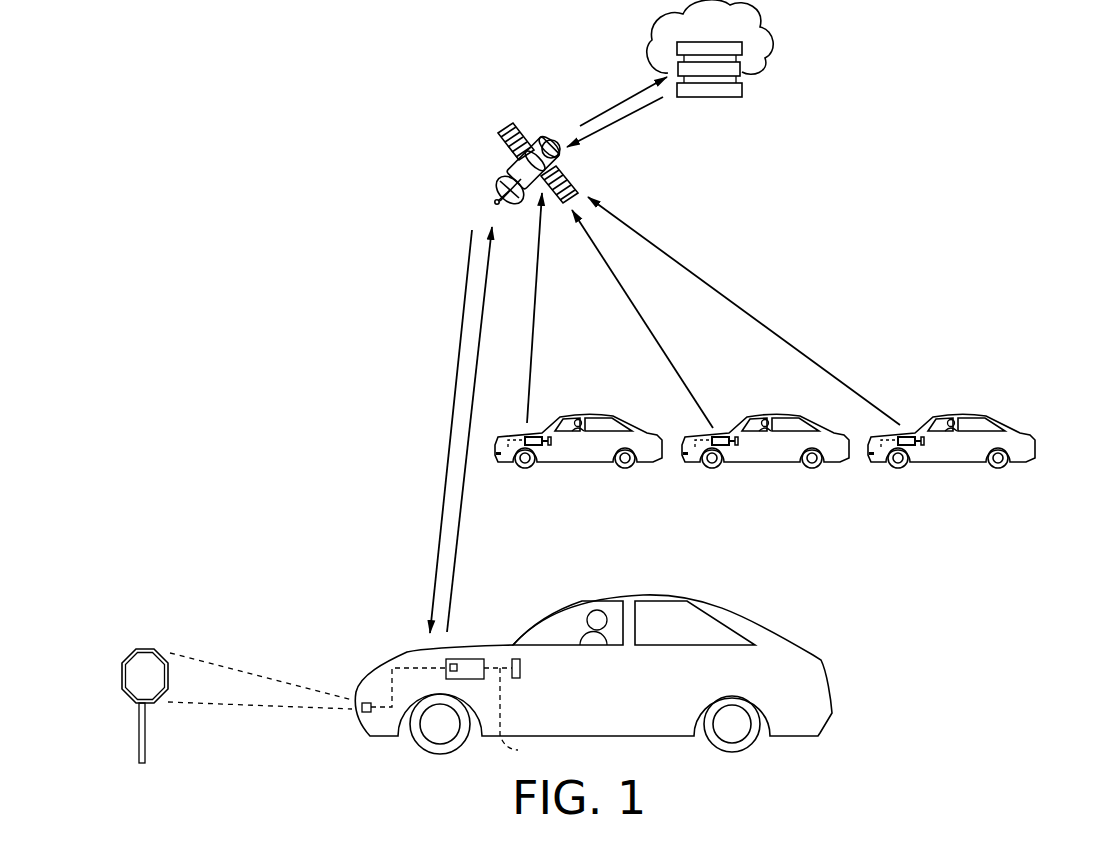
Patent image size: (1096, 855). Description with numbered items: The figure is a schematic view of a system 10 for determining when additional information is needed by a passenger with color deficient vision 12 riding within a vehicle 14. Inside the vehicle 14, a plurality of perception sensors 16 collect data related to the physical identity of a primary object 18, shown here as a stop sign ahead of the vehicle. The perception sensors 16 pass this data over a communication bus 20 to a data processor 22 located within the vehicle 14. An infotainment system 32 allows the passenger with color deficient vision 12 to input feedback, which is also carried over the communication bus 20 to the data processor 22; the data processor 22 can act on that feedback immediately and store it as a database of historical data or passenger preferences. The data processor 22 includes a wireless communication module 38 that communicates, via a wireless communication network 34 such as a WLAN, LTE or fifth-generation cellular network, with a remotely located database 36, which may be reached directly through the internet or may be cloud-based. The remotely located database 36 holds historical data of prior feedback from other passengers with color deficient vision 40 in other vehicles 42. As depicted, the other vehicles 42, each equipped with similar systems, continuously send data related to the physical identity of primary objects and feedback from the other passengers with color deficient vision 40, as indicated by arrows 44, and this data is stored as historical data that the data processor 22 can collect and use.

The system 10 is at (371, 398).
The passenger with color deficient vision 12 is at (600, 618).
The vehicle 14 is at (642, 702).
The perception sensors 16 is at (364, 701).
The primary object 18 is at (144, 658).
The communication bus 20 is at (382, 677).
The data processor 22 is at (467, 665).
The infotainment system 32 is at (520, 668).
The wireless communication network 34 is at (523, 173).
The remotely located database 36 is at (710, 92).
The wireless communication module 38 is at (447, 652).
The other passengers with color deficient vision 40 is at (580, 415).
The other vehicles 42 is at (572, 452).
The arrows 44 is at (537, 307).